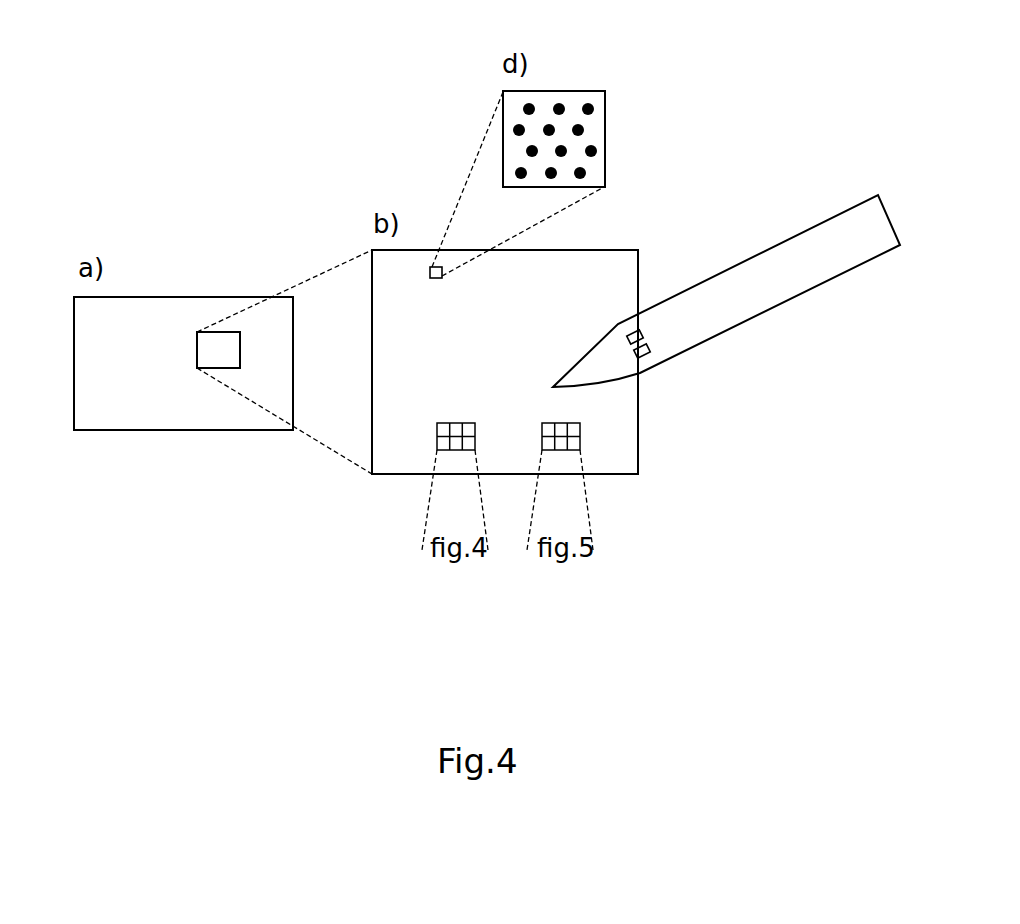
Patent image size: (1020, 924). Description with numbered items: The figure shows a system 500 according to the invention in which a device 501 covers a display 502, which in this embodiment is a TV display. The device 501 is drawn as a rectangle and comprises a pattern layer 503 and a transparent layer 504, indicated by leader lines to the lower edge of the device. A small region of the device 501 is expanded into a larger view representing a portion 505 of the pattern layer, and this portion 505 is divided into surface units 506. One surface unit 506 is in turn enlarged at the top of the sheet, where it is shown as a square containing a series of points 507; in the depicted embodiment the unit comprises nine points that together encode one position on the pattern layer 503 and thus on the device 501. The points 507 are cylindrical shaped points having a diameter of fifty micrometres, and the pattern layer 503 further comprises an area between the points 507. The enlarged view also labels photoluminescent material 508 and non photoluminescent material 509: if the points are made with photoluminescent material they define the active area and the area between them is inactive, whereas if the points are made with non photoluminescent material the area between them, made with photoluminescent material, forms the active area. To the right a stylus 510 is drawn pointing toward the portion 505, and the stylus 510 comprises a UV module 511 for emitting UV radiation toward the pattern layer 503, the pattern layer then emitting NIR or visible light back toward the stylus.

The system 500 is at (232, 125).
The device 501 is at (155, 395).
The display 502 is at (92, 432).
The pattern layer 503 is at (230, 417).
The transparent layer 504 is at (253, 420).
The portion of the pattern layer 505 is at (620, 475).
The surface unit 506 is at (605, 140).
The point 507 is at (576, 178).
The photoluminescent material 508 is at (589, 104).
The non photoluminescent material 509 is at (594, 122).
The stylus 510 is at (648, 355).
The UV module 511 is at (640, 312).